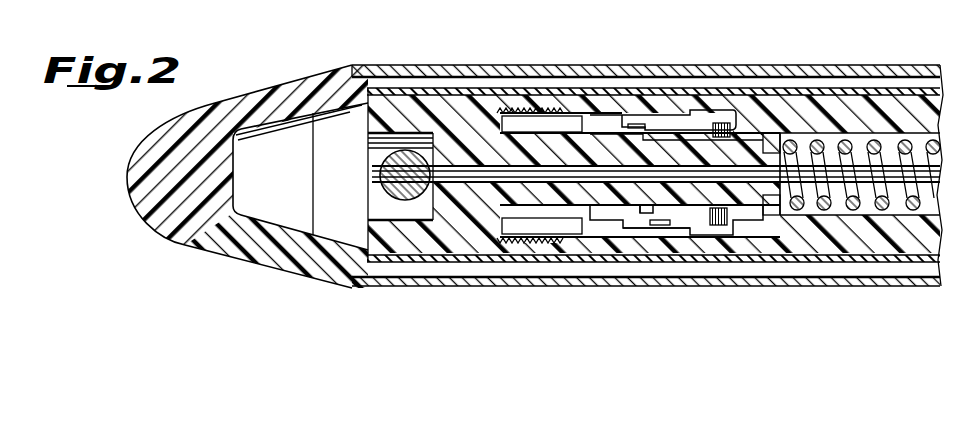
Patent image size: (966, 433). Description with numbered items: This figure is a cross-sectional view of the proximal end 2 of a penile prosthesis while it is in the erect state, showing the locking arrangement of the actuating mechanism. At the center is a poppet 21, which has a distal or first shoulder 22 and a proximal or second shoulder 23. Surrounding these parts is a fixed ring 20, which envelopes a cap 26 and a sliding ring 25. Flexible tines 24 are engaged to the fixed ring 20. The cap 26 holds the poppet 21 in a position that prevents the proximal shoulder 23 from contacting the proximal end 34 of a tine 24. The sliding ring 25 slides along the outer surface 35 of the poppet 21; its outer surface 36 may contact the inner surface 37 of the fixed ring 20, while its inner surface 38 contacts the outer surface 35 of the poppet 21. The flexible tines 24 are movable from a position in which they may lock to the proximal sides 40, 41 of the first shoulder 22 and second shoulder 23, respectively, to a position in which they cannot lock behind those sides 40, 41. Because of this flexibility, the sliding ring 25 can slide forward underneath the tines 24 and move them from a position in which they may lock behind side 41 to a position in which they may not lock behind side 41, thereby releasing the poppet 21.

The proximal end 2 is at (147, 125).
The fixed ring 20 is at (425, 103).
The poppet 21 is at (598, 207).
The first shoulder 22 is at (774, 130).
The second shoulder 23 is at (662, 122).
The flexible tines 24 is at (666, 289).
The sliding ring 25 is at (521, 236).
The cap 26 is at (464, 152).
The proximal end of tine 34 is at (710, 228).
The outer surface of poppet 35 is at (611, 207).
The outer surface of sliding ring 36 is at (533, 238).
The inner surface of fixed ring 37 is at (504, 147).
The inner surface of sliding ring 38 is at (488, 232).
The proximal side of first shoulder 40 is at (757, 128).
The proximal side of second shoulder 41 is at (640, 215).